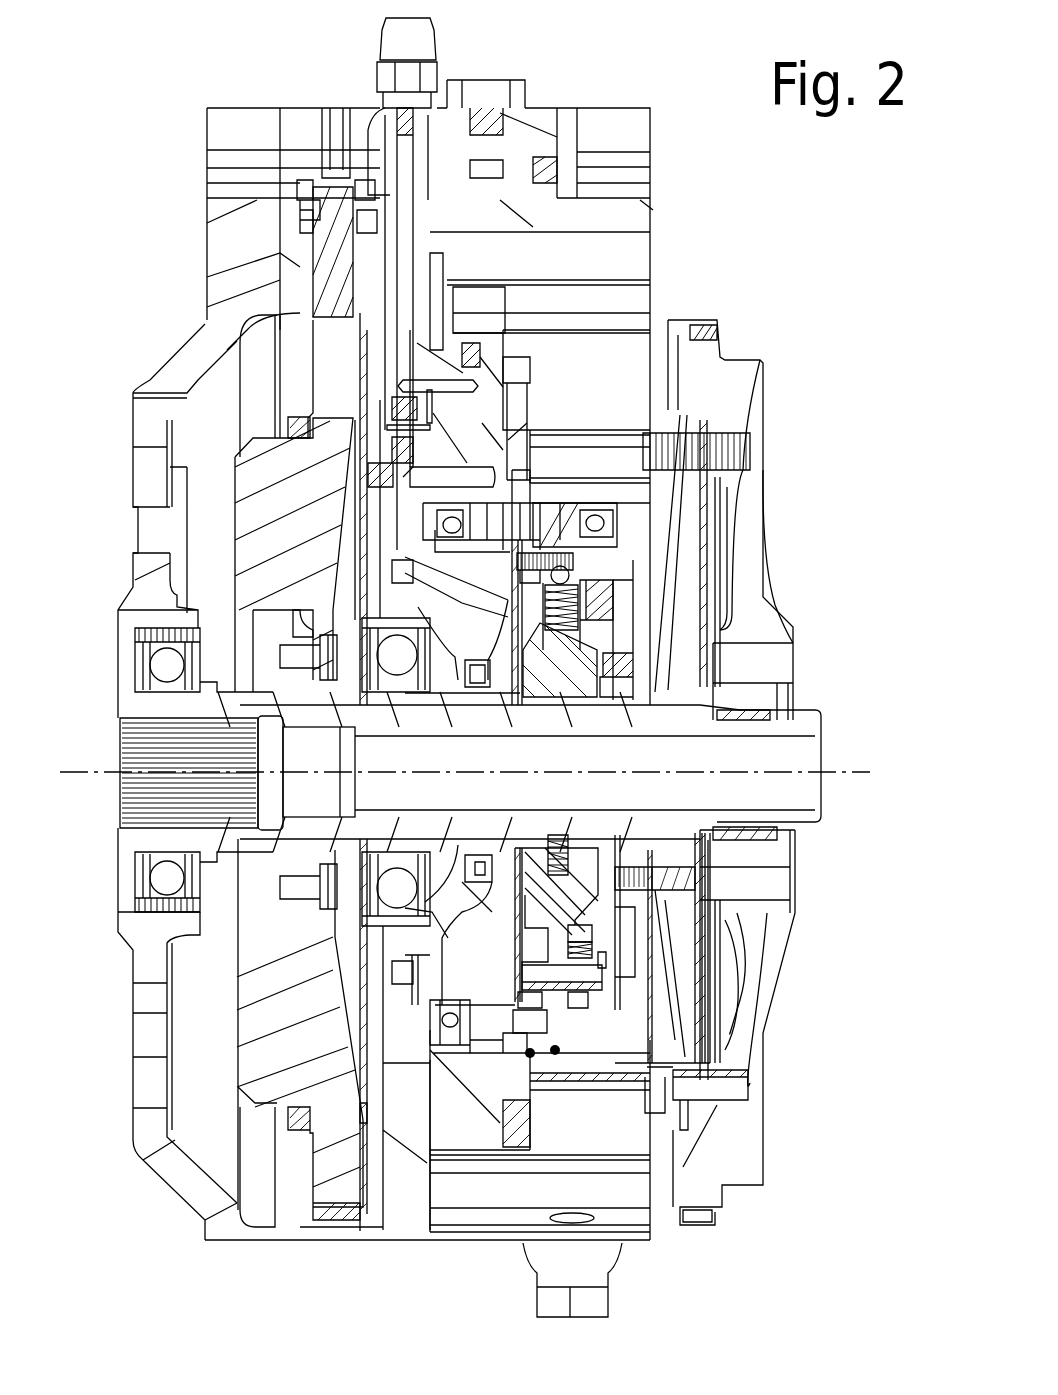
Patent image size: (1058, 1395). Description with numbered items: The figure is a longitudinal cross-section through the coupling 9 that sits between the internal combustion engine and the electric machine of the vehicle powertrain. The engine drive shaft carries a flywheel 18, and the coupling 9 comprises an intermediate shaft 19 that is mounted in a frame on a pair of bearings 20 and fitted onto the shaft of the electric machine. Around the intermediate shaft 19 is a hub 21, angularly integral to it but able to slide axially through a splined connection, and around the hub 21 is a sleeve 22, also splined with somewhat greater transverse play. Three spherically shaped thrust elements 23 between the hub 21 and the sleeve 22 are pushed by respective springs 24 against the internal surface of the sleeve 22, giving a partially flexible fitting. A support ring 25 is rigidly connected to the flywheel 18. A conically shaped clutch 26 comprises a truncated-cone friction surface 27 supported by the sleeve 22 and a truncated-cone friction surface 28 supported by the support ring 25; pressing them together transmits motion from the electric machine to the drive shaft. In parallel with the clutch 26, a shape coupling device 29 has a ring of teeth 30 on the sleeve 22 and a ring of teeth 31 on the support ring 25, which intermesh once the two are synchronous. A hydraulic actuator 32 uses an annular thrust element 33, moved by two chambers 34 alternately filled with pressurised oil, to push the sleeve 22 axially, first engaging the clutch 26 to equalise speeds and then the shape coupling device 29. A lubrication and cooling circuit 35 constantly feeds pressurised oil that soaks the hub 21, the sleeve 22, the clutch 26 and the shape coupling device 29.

The coupling 9 is at (737, 1282).
The flywheel 18 is at (740, 488).
The intermediate shaft 19 is at (128, 708).
The bearings 20 is at (160, 665).
The hub 21 is at (578, 685).
The sleeve 22 is at (562, 575).
The thrust elements 23 is at (562, 582).
The springs 24 is at (572, 608).
The support ring 25 is at (622, 635).
The clutch 26 is at (600, 917).
The friction surface 27 is at (590, 952).
The friction surface 28 is at (582, 928).
The shape coupling device 29 is at (607, 995).
The ring of teeth 30 is at (608, 963).
The ring of teeth 31 is at (612, 968).
The actuator 32 is at (552, 1112).
The annular thrust element 33 is at (487, 1025).
The chambers 34 is at (555, 1052).
The lubrication and cooling circuit 35 is at (403, 265).